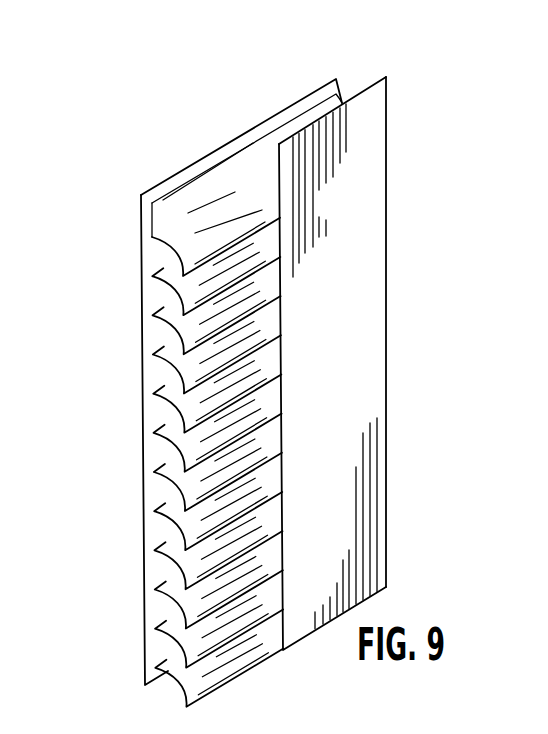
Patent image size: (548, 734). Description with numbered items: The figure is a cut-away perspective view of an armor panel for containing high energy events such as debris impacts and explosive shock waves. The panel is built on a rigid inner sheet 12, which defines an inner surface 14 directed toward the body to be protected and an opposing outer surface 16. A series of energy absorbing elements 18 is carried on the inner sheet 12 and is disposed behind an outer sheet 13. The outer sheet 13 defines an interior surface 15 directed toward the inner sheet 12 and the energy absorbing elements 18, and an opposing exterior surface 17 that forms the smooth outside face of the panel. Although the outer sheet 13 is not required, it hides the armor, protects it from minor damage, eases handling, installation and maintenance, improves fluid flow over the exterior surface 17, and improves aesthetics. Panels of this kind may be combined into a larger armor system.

The inner sheet 12 is at (130, 303).
The outer sheet 13 is at (390, 155).
The inner surface 14 is at (150, 178).
The interior surface 15 is at (367, 83).
The outer surface 16 is at (150, 227).
The exterior surface 17 is at (372, 98).
The energy absorbing elements 18 is at (168, 420).